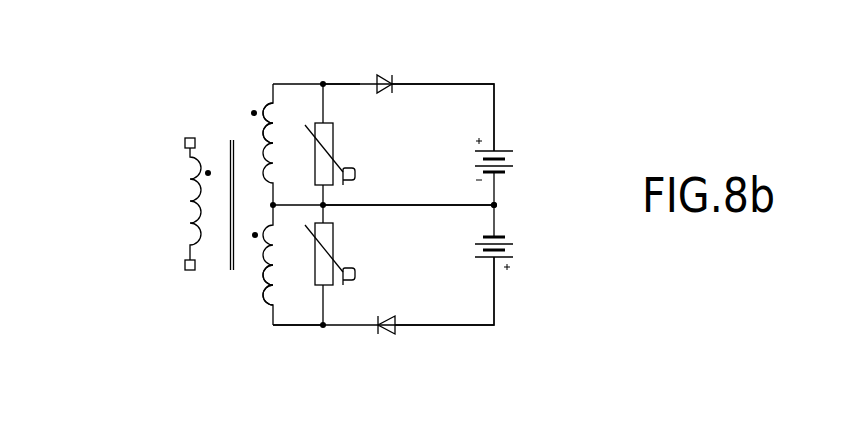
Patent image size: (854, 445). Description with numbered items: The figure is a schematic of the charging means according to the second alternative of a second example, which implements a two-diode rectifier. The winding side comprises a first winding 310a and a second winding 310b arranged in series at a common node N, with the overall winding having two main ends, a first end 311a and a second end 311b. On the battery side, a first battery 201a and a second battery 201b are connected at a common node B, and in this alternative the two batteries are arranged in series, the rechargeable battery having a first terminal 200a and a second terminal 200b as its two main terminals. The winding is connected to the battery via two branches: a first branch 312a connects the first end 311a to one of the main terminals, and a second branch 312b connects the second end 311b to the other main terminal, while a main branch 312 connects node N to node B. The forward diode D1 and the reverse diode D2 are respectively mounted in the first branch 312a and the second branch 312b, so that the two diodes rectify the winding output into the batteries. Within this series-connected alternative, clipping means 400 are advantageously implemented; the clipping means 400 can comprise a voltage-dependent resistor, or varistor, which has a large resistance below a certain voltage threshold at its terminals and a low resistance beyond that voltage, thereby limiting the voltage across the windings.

The common node N is at (273, 205).
The first end 311a is at (272, 86).
The first winding 310a is at (262, 134).
The second end 311b is at (272, 322).
The second winding 310b is at (262, 295).
The clipping means 400 is at (330, 142).
The first branch 312a is at (360, 82).
The second branch 312b is at (308, 328).
The main branch 312 is at (443, 203).
The forward diode D1 is at (385, 75).
The reverse diode D2 is at (387, 335).
The first battery 201a is at (517, 165).
The second battery 201b is at (517, 250).
The common node B is at (498, 205).
The first terminal 200a is at (496, 98).
The second terminal 200b is at (497, 318).